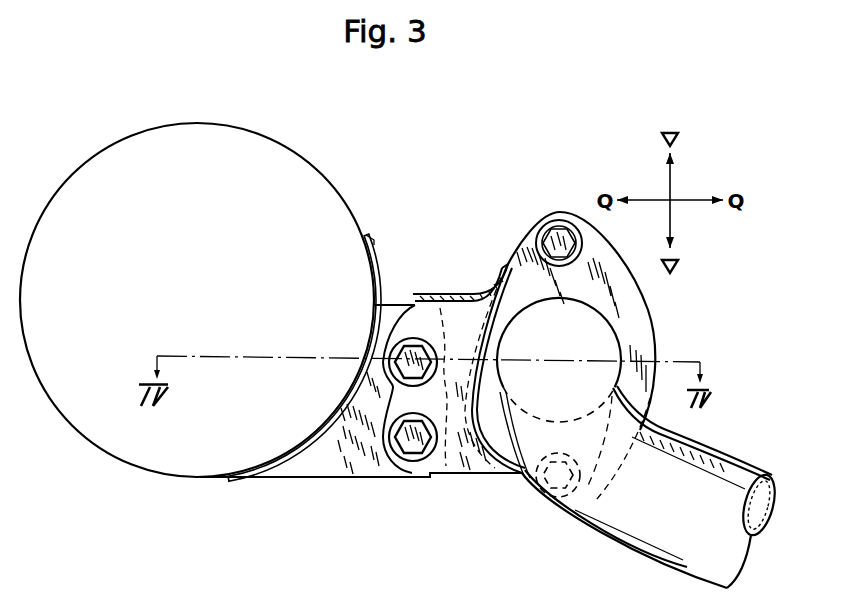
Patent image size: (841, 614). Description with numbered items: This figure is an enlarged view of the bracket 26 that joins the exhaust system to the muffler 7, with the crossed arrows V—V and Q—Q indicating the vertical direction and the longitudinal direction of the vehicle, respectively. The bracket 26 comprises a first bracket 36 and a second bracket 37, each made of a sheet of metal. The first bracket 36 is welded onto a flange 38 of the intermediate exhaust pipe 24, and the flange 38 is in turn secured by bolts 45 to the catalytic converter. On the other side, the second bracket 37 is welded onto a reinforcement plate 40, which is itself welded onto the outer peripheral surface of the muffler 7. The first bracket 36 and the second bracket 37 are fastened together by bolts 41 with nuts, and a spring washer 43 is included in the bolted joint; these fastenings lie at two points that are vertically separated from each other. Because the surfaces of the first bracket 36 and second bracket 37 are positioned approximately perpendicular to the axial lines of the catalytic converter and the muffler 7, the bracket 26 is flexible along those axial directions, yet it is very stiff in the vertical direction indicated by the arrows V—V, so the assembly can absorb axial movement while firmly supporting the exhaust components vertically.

The muffler 7 is at (286, 140).
The intermediate exhaust pipe 24 is at (694, 451).
The bracket 26 is at (412, 208).
The first bracket 36 is at (457, 293).
The second bracket 37 is at (399, 303).
The flange 38 is at (648, 312).
The reinforcement plate 40 is at (370, 250).
The bolts 41 is at (427, 340).
The spring washer 43 is at (438, 361).
The bolts 45 is at (555, 221).